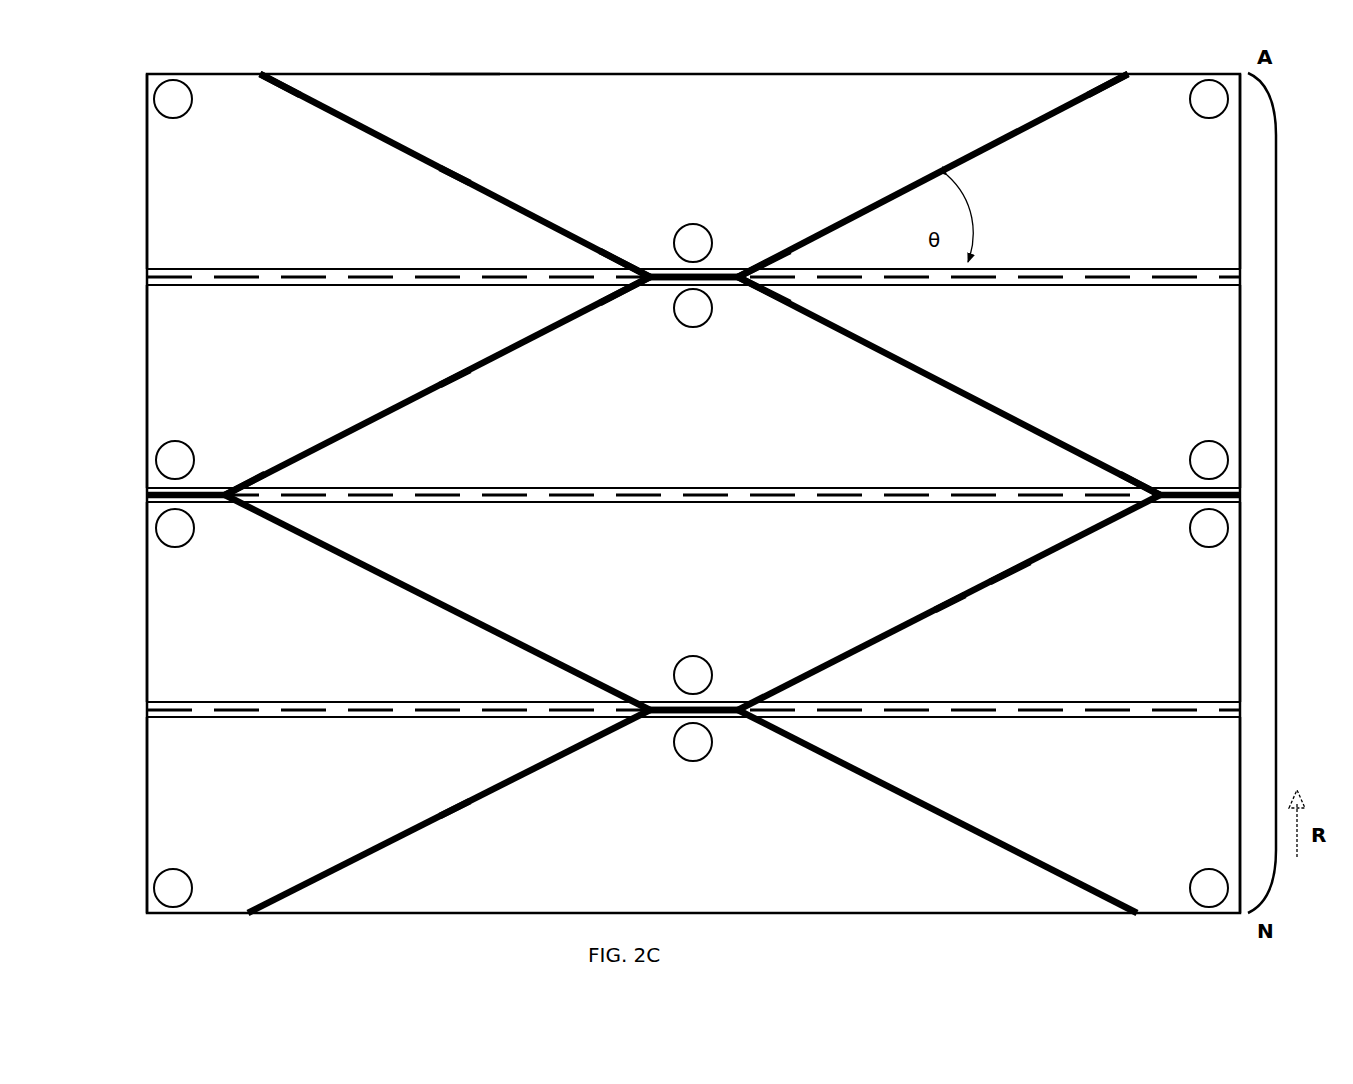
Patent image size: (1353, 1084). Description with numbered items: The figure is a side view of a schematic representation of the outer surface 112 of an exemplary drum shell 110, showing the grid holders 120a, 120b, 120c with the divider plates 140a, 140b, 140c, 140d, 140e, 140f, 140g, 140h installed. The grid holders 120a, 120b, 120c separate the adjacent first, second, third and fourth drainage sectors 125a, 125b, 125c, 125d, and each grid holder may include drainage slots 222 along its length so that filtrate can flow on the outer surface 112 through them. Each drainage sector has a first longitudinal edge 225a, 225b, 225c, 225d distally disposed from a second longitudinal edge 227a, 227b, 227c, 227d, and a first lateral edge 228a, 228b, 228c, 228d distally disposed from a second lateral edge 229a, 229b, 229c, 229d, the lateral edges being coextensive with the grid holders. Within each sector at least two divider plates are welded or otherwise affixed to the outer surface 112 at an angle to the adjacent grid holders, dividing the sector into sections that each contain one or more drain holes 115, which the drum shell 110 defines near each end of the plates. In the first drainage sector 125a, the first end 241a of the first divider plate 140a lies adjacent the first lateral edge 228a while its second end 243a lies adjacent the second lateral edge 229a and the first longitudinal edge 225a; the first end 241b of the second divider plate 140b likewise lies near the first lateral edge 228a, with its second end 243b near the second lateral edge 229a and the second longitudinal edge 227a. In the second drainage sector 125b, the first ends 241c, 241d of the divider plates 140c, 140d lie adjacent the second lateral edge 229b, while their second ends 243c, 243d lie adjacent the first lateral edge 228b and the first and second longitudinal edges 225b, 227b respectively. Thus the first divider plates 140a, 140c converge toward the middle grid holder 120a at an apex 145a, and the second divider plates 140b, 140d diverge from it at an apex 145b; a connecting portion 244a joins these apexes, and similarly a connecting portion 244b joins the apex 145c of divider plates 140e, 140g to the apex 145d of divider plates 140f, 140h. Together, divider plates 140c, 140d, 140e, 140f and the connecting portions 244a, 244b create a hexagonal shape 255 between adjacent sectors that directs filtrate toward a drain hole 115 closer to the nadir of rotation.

The drum shell 110 is at (126, 80).
The outer surface 112 is at (1278, 498).
The drain holes 115 is at (178, 118).
The grid holder 120a is at (305, 268).
The grid holder 120b is at (548, 487).
The grid holder 120c is at (305, 701).
The first drainage sector 125a is at (166, 194).
The second drainage sector 125b is at (178, 339).
The third drainage sector 125c is at (173, 620).
The fourth drainage sector 125d is at (173, 824).
The first divider plate 140a is at (470, 180).
The second divider plate 140b is at (907, 182).
The first divider plate 140c is at (400, 400).
The second divider plate 140d is at (930, 362).
The divider plate 140e is at (475, 614).
The divider plate 140f is at (902, 612).
The divider plate 140g is at (380, 840).
The divider plate 140h is at (1005, 830).
The apex 145a is at (605, 290).
The apex 145b is at (782, 289).
The apex 145c is at (605, 695).
The apex 145d is at (782, 697).
The drainage slots 222 is at (1069, 268).
The first longitudinal edge 225a is at (150, 244).
The first longitudinal edge 225b is at (150, 393).
The first longitudinal edge 225c is at (150, 670).
The first longitudinal edge 225d is at (150, 777).
The second longitudinal edge 227a is at (1238, 246).
The second longitudinal edge 227b is at (1238, 366).
The second longitudinal edge 227c is at (1238, 669).
The second longitudinal edge 227d is at (1238, 777).
The first lateral edge 228a is at (462, 263).
The first lateral edge 228b is at (462, 481).
The first lateral edge 228c is at (972, 692).
The first lateral edge 228d is at (440, 905).
The second lateral edge 229a is at (462, 84).
The second lateral edge 229b is at (462, 291).
The second lateral edge 229c is at (972, 506).
The second lateral edge 229d is at (440, 721).
The first end 241a is at (648, 265).
The first end 241b is at (738, 265).
The first end 241c is at (646, 291).
The first end 241d is at (740, 291).
The second end 243a is at (265, 82).
The second end 243b is at (1128, 82).
The second end 243c is at (228, 488).
The second end 243d is at (1158, 488).
The connecting portion 244a is at (660, 290).
The connecting portion 244b is at (658, 700).
The hexagonal shape 255 is at (1012, 586).